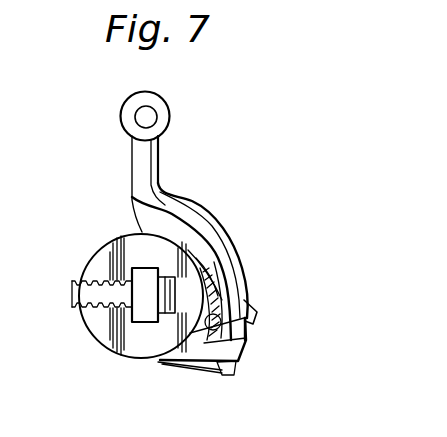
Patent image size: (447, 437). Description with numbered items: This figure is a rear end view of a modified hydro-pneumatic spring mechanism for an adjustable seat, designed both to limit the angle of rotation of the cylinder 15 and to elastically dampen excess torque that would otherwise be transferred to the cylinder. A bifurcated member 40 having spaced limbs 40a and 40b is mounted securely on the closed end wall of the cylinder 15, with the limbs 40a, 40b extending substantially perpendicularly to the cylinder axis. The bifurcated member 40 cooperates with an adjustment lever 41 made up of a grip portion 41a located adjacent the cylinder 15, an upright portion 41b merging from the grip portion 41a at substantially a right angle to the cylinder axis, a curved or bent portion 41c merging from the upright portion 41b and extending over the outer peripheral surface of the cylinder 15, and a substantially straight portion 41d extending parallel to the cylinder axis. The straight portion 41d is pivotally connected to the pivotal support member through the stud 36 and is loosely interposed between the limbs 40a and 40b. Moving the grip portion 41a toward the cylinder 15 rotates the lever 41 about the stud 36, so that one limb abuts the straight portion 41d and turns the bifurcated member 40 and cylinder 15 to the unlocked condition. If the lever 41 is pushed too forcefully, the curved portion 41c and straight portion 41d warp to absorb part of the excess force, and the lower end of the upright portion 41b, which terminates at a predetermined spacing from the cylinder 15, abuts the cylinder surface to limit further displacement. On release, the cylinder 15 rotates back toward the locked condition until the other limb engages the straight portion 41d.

The cylinder 15 is at (86, 276).
The stud 36 is at (144, 312).
The bifurcated member 40 is at (225, 332).
The limb 40a is at (246, 317).
The limb 40b is at (223, 375).
The adjustment lever 41 is at (201, 213).
The grip portion 41a is at (148, 116).
The upright portion 41b is at (160, 163).
The curved or bent portion 41c is at (206, 222).
The straight portion 41d is at (256, 318).